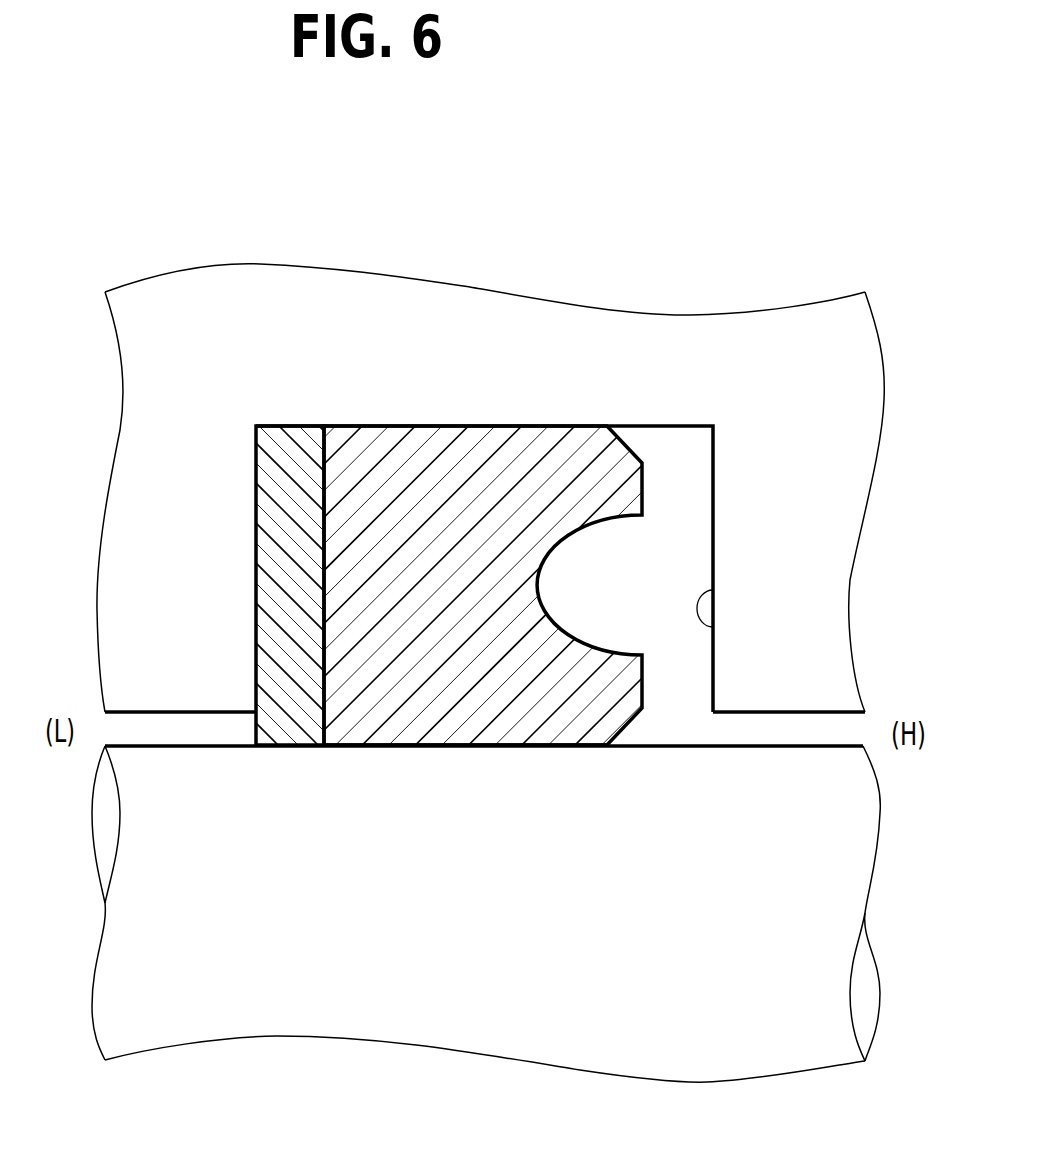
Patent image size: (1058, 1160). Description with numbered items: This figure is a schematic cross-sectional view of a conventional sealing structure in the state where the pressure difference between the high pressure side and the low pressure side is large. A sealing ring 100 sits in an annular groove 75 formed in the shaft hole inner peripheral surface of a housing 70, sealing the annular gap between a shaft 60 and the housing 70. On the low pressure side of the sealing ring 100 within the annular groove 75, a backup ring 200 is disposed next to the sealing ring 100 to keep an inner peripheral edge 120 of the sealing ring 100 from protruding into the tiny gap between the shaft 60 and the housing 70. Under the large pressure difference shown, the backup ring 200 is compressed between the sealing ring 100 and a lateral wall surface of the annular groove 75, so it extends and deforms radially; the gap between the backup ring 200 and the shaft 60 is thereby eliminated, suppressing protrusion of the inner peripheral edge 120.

The shaft 60 is at (846, 910).
The housing 70 is at (862, 428).
The annular groove 75 is at (713, 590).
The sealing ring 100 is at (422, 447).
The inner peripheral edge 120 is at (343, 750).
The backup ring 200 is at (303, 447).